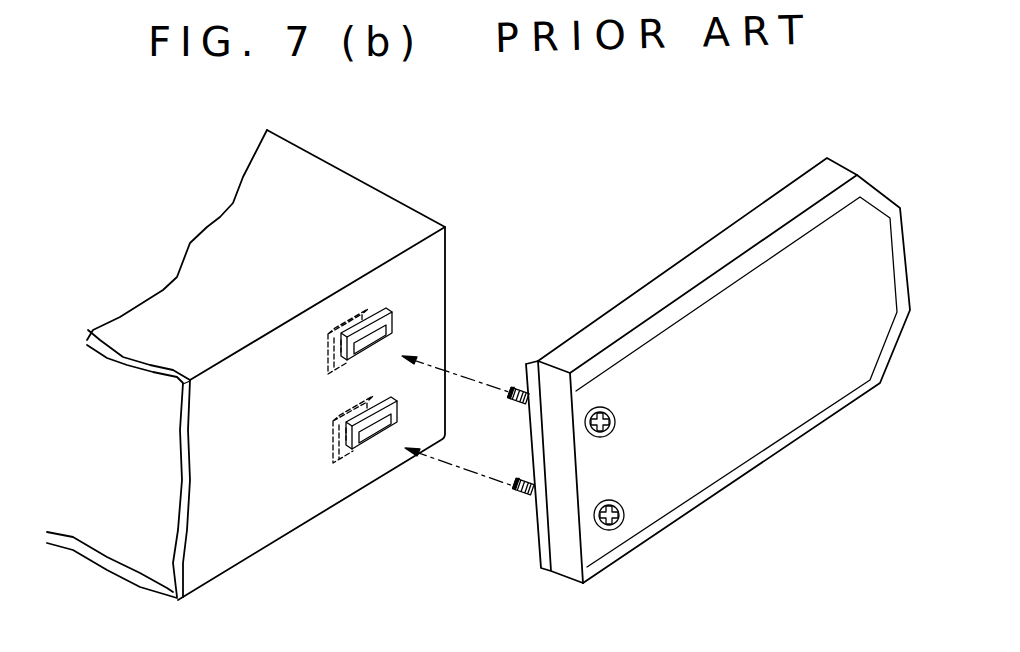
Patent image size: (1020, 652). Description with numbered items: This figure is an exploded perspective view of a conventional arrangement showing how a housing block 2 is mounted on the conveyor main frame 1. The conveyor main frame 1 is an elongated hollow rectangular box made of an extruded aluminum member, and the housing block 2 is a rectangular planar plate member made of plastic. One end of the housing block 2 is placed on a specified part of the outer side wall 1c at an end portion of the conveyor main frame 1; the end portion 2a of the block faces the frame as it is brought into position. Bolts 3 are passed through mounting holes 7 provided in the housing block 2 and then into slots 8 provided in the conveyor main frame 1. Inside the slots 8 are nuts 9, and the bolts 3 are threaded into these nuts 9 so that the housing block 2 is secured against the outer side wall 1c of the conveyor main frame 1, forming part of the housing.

The conveyor main frame 1 is at (347, 185).
The outer side wall 1c is at (236, 429).
The housing block 2 is at (777, 424).
The end face of panel 2a is at (535, 538).
The bolt 3 is at (613, 428).
The mounting hole 7 is at (613, 405).
The slot 8 is at (393, 322).
The nut 9 is at (345, 320).